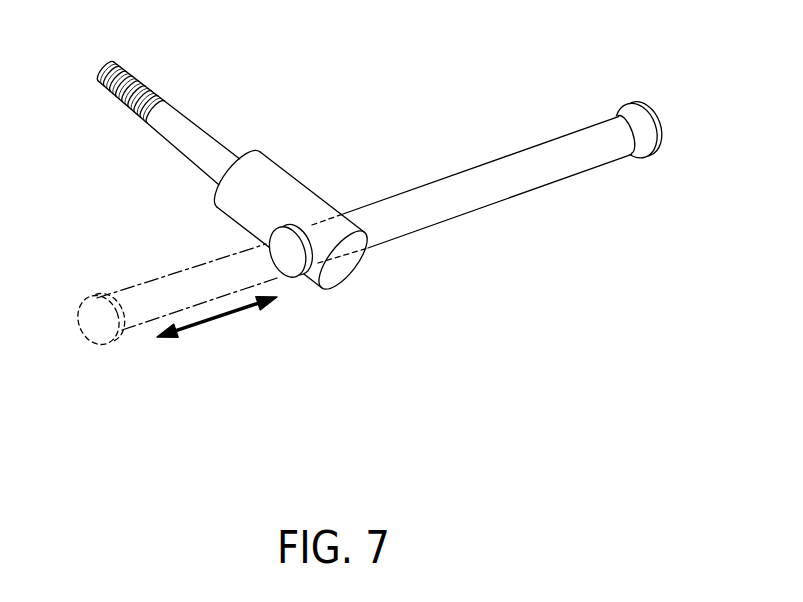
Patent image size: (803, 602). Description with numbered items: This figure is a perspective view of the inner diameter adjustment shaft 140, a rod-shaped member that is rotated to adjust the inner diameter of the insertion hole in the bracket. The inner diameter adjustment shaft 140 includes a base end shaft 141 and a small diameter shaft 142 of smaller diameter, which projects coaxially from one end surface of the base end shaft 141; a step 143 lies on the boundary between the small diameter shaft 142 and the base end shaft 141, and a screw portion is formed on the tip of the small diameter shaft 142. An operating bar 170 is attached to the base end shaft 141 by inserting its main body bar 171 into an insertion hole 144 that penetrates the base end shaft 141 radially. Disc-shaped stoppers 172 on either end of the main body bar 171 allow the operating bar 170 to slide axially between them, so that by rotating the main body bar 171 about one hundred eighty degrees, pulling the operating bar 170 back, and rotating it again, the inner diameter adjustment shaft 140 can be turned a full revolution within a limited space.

The inner diameter adjustment shaft 140 is at (207, 230).
The base end shaft 141 is at (268, 183).
The small diameter shaft 142 is at (136, 113).
The step 143 is at (217, 193).
The insertion hole 144 is at (316, 224).
The operating bar 170 is at (397, 224).
The main body bar 171 is at (467, 188).
The stopper 172 is at (296, 283).